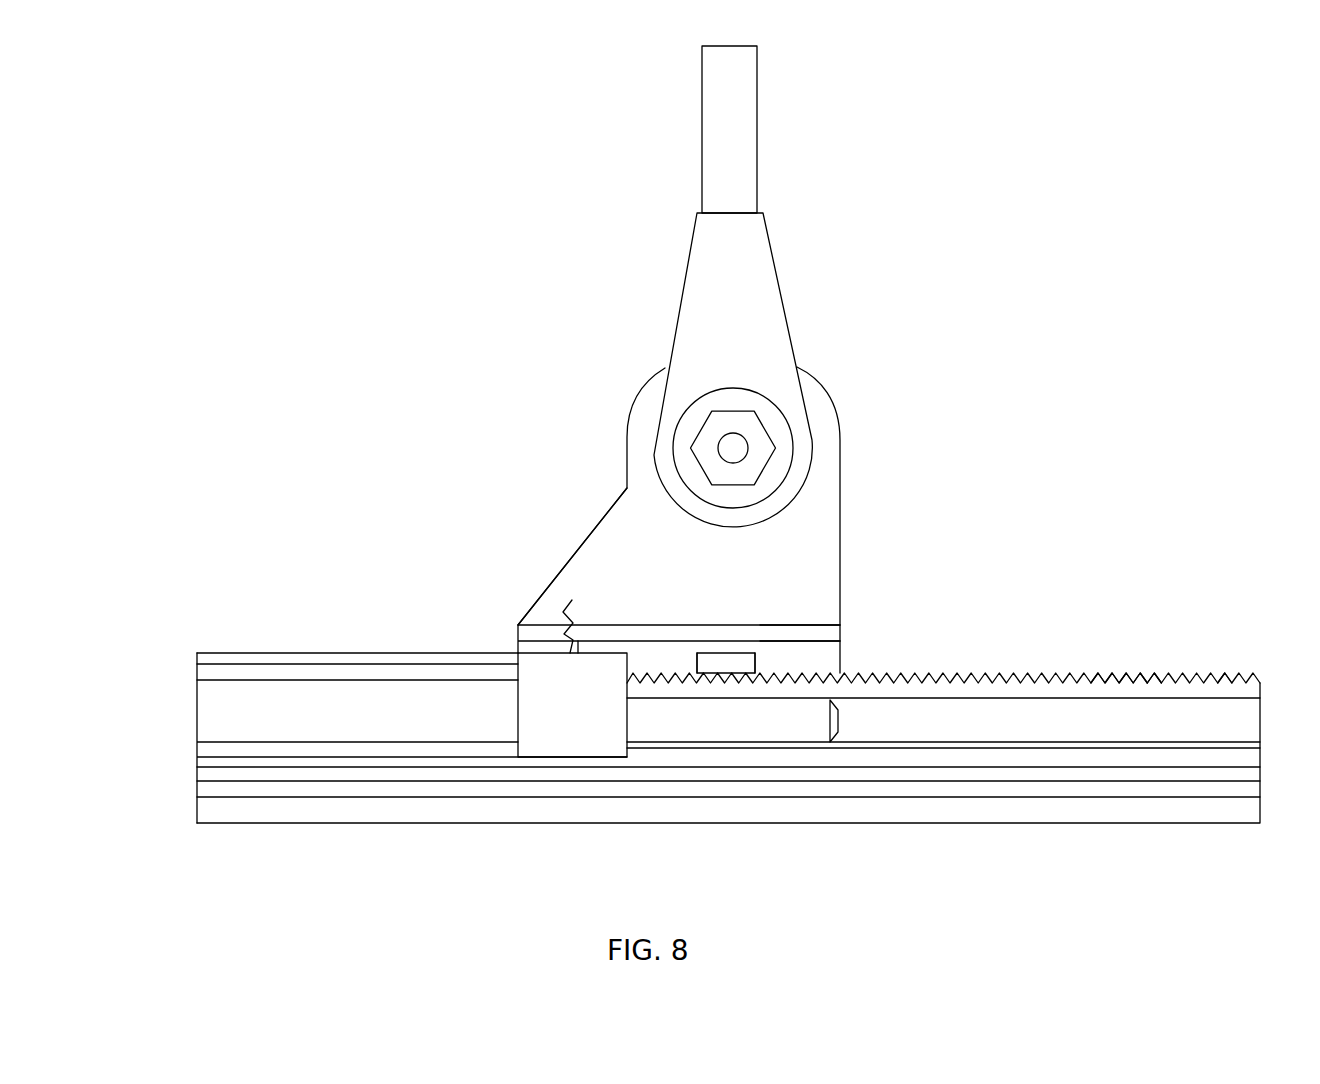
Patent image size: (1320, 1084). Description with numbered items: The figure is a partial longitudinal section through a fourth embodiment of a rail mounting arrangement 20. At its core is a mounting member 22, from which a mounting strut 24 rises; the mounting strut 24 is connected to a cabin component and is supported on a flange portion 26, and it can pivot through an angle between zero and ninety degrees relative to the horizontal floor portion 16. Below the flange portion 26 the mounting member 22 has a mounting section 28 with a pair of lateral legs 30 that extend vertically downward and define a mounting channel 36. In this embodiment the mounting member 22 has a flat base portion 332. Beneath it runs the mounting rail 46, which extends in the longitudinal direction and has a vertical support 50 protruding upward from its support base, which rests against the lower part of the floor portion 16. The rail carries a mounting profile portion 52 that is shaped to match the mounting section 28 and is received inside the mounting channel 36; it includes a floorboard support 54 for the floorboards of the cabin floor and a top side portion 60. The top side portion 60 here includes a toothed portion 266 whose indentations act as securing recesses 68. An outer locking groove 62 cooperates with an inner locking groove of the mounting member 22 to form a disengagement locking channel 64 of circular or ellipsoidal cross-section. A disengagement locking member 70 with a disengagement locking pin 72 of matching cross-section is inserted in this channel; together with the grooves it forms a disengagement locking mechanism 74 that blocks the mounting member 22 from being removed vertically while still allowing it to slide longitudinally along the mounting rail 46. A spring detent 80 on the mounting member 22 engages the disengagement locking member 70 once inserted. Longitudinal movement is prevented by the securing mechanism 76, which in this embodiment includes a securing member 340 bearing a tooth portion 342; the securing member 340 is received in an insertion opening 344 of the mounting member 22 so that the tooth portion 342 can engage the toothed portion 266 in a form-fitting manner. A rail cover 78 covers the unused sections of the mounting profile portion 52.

The horizontal floor portion 16 is at (491, 84).
The rail mounting arrangement 20 is at (556, 101).
The mounting member 22 is at (600, 378).
The mounting strut 24 is at (738, 133).
The flange portion 26 is at (820, 420).
The mounting section 28 is at (533, 507).
The lateral legs 30 is at (817, 651).
The mounting channel 36 is at (812, 664).
The mounting rail 46 is at (256, 813).
The vertical support 50 is at (364, 808).
The mounting profile portion 52 is at (1088, 578).
The floorboard support 54 is at (215, 745).
The top side portion 60 is at (1159, 555).
The outer locking groove 62 is at (892, 718).
The disengagement locking channel 64 is at (763, 718).
The securing recess 68 is at (1160, 675).
The disengagement locking member 70 is at (540, 676).
The disengagement locking pin 72 is at (675, 718).
The disengagement locking mechanism 74 is at (482, 562).
The securing mechanism 76 is at (815, 590).
The rail cover 78 is at (230, 672).
The spring detent 80 is at (572, 600).
The toothed portion 266 is at (1222, 675).
The flat base portion 332 is at (818, 637).
The securing member 340 is at (735, 663).
The tooth portion 342 is at (731, 662).
The insertion opening 344 is at (755, 673).